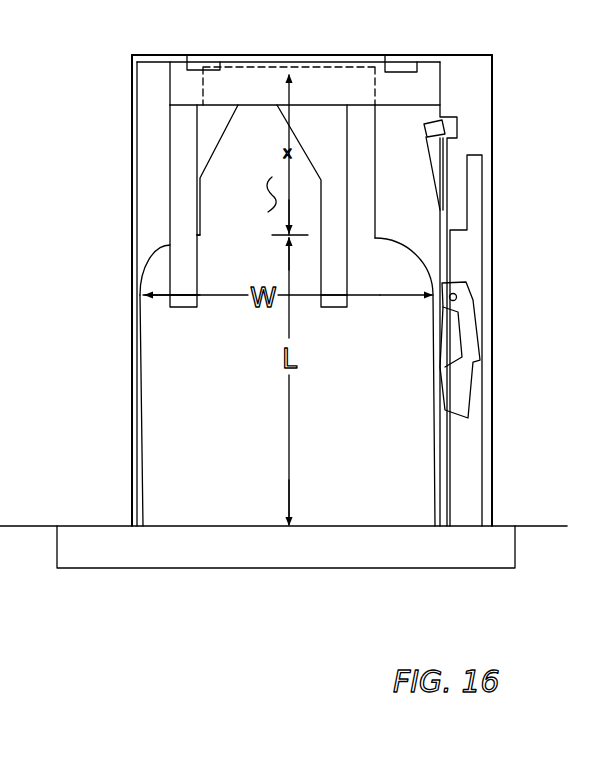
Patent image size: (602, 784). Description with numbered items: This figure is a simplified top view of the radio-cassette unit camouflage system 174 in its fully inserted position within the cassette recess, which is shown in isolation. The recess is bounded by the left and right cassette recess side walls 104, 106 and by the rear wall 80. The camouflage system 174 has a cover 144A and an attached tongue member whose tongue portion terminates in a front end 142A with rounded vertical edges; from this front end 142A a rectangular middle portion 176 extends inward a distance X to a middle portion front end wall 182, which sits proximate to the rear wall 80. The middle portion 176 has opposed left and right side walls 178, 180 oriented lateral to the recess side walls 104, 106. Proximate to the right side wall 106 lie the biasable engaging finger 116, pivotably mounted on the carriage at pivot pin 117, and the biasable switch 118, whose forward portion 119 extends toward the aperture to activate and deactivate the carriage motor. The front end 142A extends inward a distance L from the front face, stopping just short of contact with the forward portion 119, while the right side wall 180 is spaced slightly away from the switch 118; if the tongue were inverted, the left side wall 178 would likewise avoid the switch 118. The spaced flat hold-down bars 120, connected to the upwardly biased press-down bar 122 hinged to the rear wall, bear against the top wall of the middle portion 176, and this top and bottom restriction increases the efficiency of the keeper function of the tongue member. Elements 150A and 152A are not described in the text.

The rear wall 80 is at (429, 61).
The left cassette recess side wall 104 is at (137, 217).
The right cassette recess side wall 106 is at (485, 208).
The biasable engaging finger 116 is at (452, 378).
The pivot pin 117 is at (457, 297).
The biasable switch 118 is at (440, 118).
The forward portion 119 is at (437, 148).
The hold-down bars 120 is at (335, 265).
The press-down bar 122 is at (184, 83).
The front end 142A is at (185, 238).
The cover 144A is at (497, 545).
The left spring leg 150A is at (143, 458).
The right spring leg 152A is at (435, 452).
The radio-cassette unit camouflage system 174 is at (237, 578).
The middle portion 176 is at (252, 202).
The middle portion left side wall 178 is at (207, 173).
The middle portion right side wall 180 is at (376, 188).
The middle portion front end wall 182 is at (282, 64).